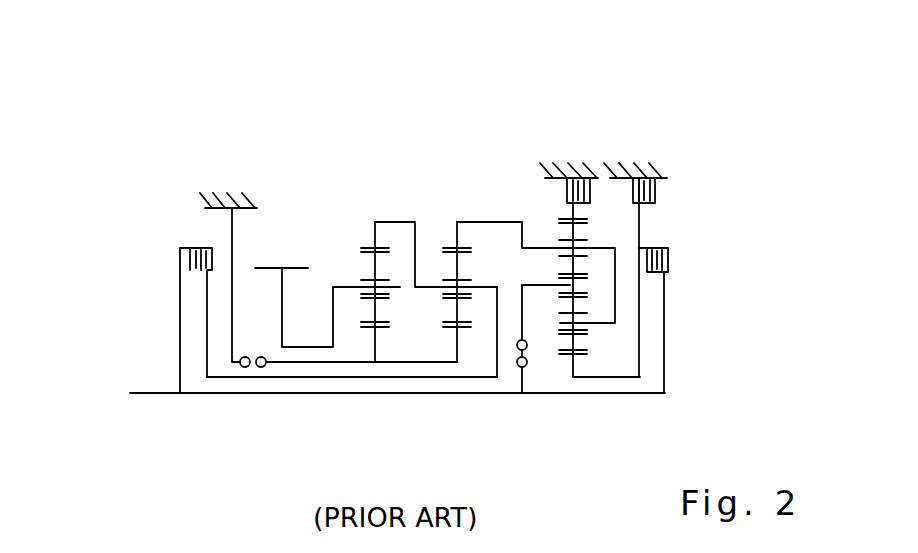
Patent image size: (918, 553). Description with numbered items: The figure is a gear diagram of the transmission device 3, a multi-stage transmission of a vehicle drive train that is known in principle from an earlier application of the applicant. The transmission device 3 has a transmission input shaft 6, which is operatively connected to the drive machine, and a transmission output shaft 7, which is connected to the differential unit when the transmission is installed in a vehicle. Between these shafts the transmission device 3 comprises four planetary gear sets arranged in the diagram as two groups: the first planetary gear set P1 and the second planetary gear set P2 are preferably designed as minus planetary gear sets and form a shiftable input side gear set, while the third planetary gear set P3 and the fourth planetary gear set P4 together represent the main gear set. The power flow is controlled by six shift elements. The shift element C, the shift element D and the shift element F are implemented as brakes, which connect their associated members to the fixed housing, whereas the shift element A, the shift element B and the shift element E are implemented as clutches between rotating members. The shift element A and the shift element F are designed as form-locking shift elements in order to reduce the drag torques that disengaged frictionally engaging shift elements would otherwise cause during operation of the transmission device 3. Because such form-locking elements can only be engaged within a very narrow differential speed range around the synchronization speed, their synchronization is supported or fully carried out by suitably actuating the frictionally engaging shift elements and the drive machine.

The shift element E is at (183, 250).
The transmission device 3 is at (185, 178).
The transmission output shaft 7 is at (283, 310).
The third planetary gear set P3 is at (443, 272).
The second planetary gear set P2 is at (553, 230).
The shift element D is at (588, 177).
The shift element C is at (657, 177).
The shift element B is at (670, 258).
The transmission input shaft 6 is at (160, 395).
The shift element F is at (257, 370).
The fourth planetary gear set P4 is at (383, 298).
The shift element A is at (518, 358).
The first planetary gear set P1 is at (588, 332).